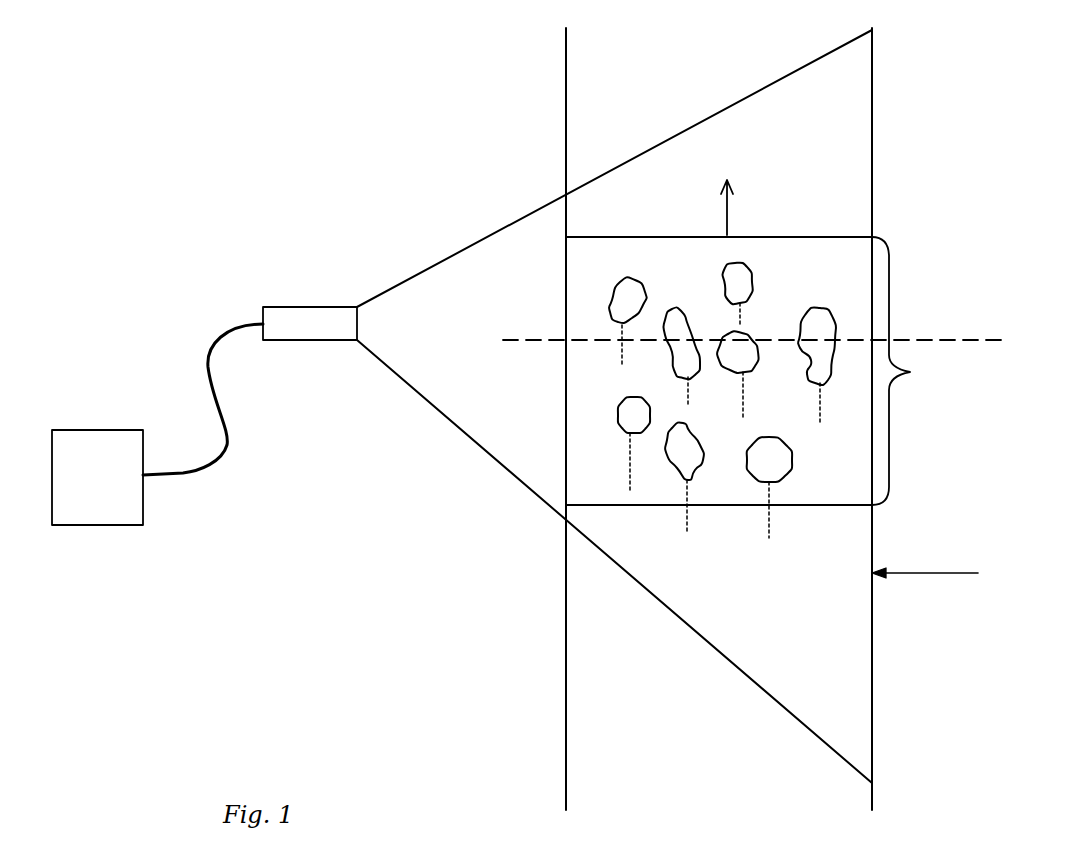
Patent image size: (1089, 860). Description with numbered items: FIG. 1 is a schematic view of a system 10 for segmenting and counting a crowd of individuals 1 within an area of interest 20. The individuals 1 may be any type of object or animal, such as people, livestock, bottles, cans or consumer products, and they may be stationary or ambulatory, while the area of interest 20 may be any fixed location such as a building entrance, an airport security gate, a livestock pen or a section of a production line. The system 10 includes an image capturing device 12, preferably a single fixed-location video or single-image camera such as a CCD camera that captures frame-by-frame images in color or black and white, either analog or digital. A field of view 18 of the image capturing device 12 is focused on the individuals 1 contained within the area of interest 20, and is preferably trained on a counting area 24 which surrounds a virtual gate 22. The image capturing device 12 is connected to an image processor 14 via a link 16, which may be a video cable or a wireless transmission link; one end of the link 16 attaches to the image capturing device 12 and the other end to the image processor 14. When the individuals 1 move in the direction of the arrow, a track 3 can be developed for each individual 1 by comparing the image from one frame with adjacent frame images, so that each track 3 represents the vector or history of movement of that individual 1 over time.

The system 10 is at (205, 212).
The image capturing device 12 is at (317, 307).
The image processor 14 is at (108, 491).
The link 16 is at (227, 453).
The field of view 18 is at (533, 467).
The area of interest 20 is at (937, 577).
The virtual gate 22 is at (980, 342).
The counting area 24 is at (753, 342).
The individuals 1 is at (623, 417).
The track 3 is at (735, 317).